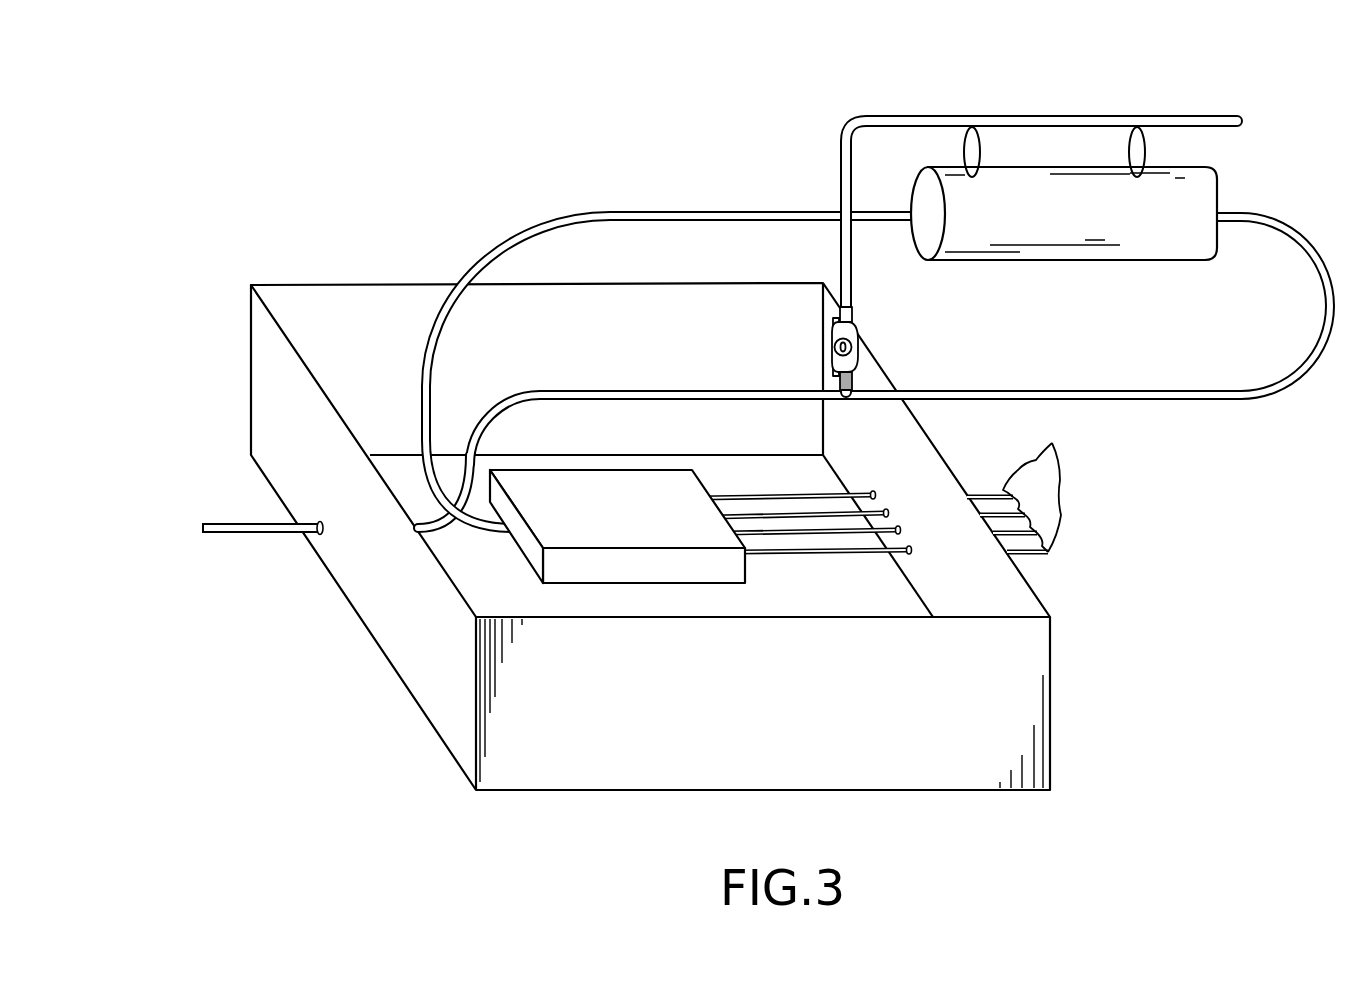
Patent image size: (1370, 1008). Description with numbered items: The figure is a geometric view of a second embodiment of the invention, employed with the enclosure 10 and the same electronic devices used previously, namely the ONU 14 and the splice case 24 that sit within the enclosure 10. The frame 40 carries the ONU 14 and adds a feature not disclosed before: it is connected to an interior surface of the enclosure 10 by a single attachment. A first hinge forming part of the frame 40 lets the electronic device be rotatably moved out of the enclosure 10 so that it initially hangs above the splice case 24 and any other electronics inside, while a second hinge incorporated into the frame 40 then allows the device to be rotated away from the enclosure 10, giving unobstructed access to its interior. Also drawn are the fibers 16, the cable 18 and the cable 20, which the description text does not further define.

The enclosure 10 is at (583, 792).
The ONU 14 is at (1020, 167).
The optical fibers 16 is at (1018, 480).
The fiber optic cable 18 is at (578, 211).
The cable 20 is at (262, 534).
The splice case 24 is at (628, 480).
The frame 40 is at (901, 113).